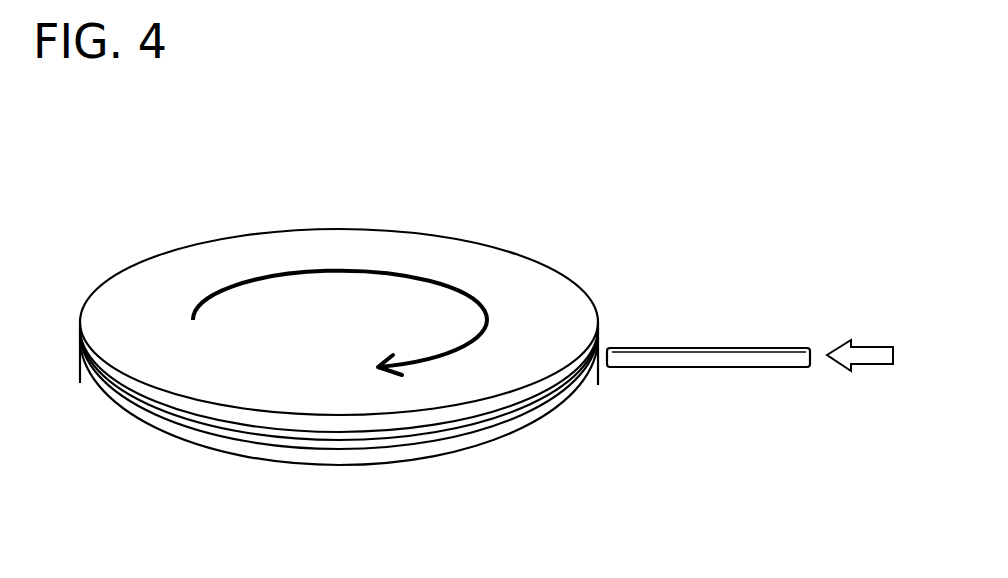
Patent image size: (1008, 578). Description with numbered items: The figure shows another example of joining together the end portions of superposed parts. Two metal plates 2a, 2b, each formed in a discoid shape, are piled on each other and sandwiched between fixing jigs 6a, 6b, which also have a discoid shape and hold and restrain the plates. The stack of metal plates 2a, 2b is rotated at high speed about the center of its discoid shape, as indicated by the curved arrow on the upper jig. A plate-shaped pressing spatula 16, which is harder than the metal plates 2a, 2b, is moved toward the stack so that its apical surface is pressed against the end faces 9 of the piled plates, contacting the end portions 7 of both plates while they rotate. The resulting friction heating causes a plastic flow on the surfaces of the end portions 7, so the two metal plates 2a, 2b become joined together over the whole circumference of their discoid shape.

The fixing jig 6a is at (205, 258).
The fixing jig 6b is at (223, 448).
The metal plate 2a is at (432, 428).
The metal plate 2b is at (500, 423).
The end faces 9 is at (545, 402).
The end portions 7 is at (596, 391).
The pressing spatula 16 is at (694, 358).